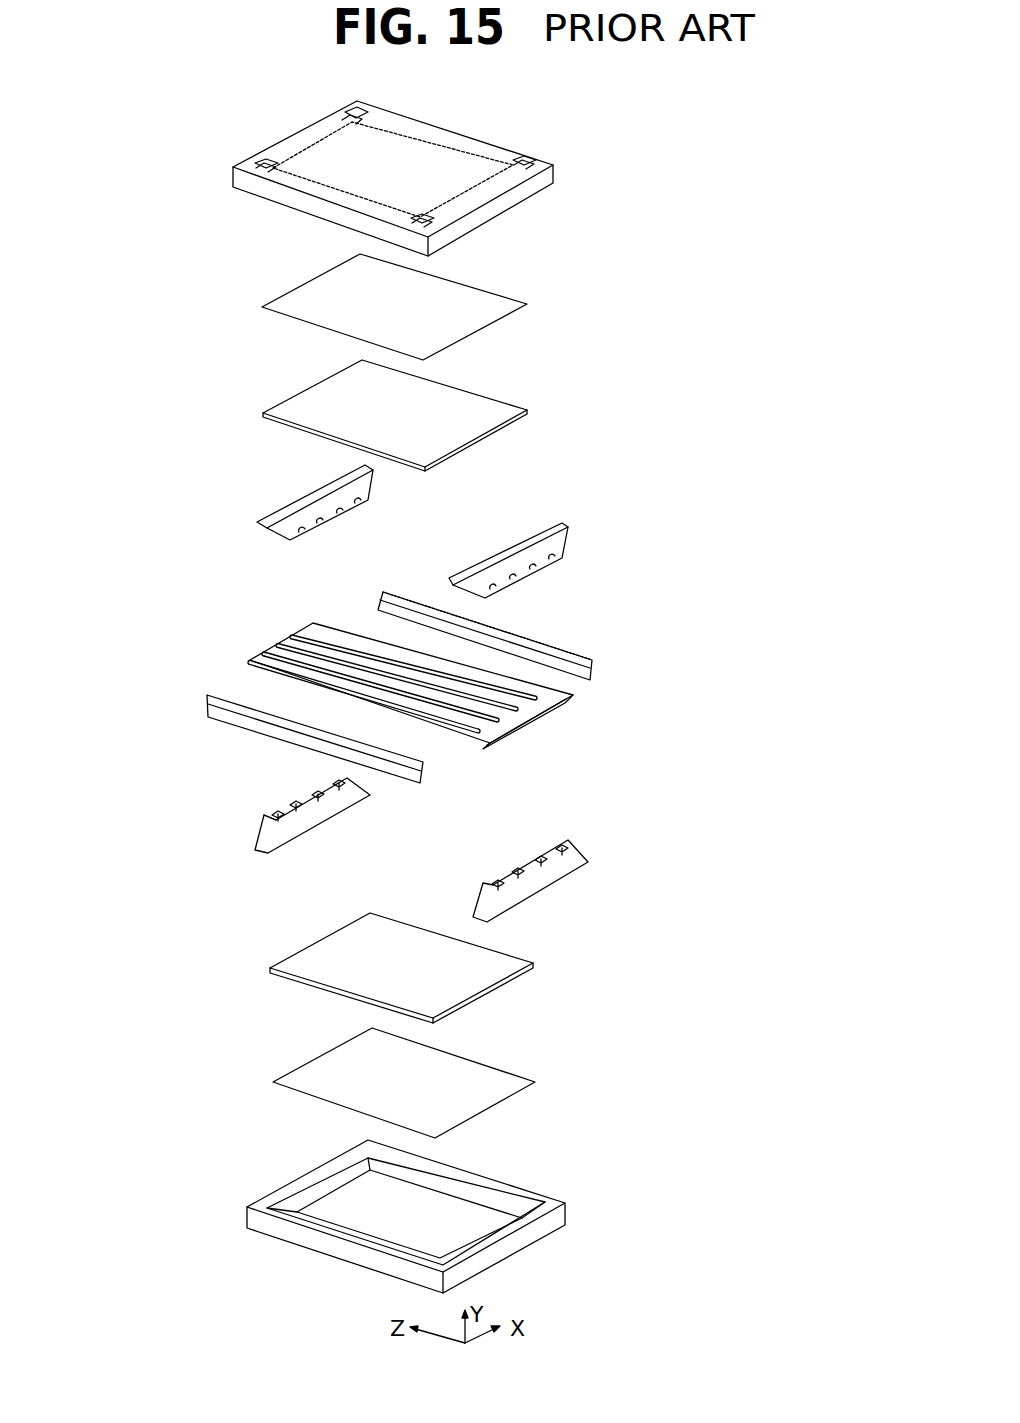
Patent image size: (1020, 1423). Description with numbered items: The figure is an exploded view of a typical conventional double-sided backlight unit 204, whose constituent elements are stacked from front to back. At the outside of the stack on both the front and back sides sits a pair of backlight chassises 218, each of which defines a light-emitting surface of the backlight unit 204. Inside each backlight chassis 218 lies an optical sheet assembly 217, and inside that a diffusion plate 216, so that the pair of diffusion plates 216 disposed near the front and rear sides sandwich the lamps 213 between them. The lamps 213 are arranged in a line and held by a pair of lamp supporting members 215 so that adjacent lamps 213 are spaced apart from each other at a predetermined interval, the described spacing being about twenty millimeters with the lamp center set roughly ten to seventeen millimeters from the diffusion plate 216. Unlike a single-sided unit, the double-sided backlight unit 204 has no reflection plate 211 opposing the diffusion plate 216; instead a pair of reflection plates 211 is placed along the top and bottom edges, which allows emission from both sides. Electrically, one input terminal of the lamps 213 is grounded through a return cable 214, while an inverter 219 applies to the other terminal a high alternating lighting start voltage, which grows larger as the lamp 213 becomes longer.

The double-sided backlight unit 204 is at (159, 135).
The reflection plate 211 is at (563, 637).
The lamp 213 is at (453, 727).
The return cable 214 is at (292, 638).
The lamp supporting member 215 is at (562, 523).
The diffusion plate 216 is at (493, 398).
The optical sheet assembly 217 is at (490, 290).
The backlight chassis 218 is at (520, 150).
The inverter 219 is at (535, 720).